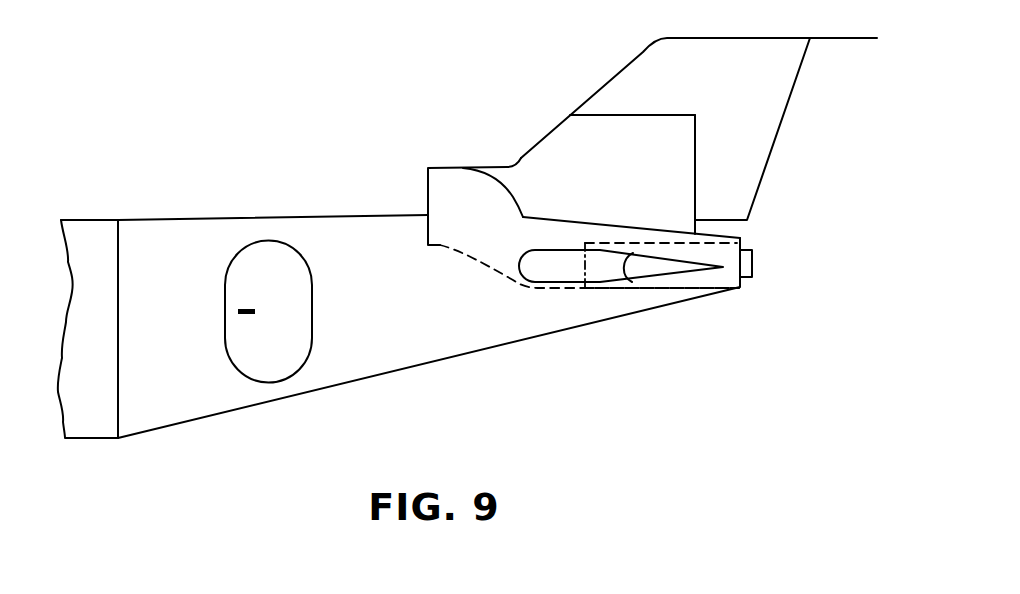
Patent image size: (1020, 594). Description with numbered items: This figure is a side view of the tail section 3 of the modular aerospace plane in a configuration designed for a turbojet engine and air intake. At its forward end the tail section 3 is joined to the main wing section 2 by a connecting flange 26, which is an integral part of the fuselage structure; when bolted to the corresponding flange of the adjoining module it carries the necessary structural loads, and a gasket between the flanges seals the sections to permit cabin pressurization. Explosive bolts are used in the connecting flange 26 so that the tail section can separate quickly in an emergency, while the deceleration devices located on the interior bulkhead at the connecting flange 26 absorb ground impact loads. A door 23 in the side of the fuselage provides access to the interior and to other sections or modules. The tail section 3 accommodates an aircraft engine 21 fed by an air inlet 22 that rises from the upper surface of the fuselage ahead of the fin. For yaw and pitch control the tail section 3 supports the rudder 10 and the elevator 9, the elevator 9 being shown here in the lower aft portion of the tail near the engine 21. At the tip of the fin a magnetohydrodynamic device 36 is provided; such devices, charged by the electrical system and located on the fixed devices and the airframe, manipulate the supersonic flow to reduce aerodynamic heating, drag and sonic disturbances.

The main wing section 2 is at (88, 236).
The tail section 3 is at (165, 395).
The elevator 9 is at (648, 268).
The rudder 10 is at (636, 85).
The aircraft engine 21 is at (727, 275).
The air inlet 22 is at (462, 202).
The door 23 is at (282, 265).
The connecting flange 26 is at (118, 260).
The magnetohydrodynamic device 36 is at (840, 42).